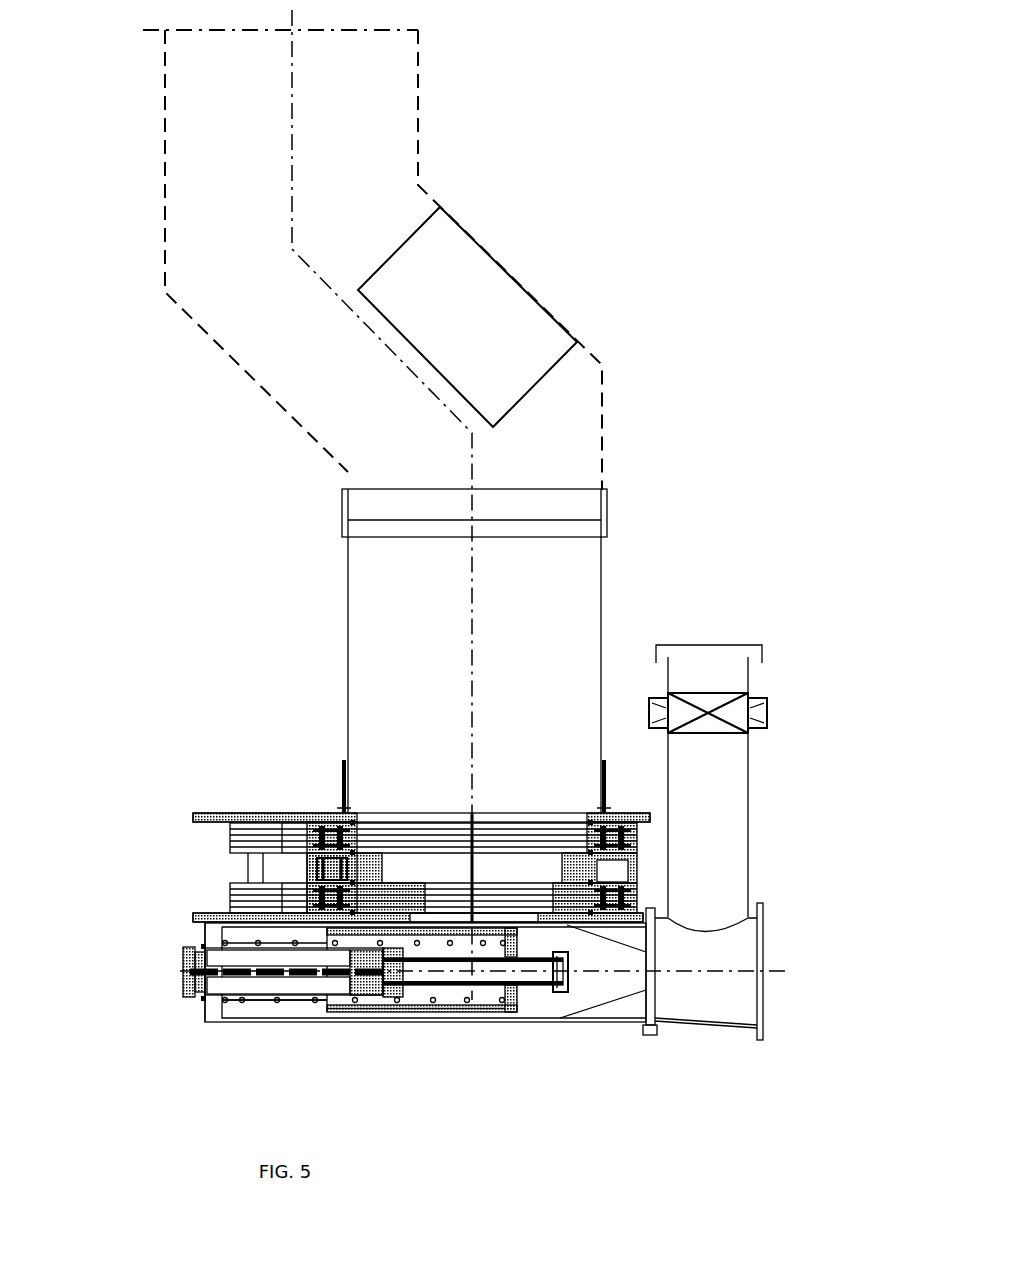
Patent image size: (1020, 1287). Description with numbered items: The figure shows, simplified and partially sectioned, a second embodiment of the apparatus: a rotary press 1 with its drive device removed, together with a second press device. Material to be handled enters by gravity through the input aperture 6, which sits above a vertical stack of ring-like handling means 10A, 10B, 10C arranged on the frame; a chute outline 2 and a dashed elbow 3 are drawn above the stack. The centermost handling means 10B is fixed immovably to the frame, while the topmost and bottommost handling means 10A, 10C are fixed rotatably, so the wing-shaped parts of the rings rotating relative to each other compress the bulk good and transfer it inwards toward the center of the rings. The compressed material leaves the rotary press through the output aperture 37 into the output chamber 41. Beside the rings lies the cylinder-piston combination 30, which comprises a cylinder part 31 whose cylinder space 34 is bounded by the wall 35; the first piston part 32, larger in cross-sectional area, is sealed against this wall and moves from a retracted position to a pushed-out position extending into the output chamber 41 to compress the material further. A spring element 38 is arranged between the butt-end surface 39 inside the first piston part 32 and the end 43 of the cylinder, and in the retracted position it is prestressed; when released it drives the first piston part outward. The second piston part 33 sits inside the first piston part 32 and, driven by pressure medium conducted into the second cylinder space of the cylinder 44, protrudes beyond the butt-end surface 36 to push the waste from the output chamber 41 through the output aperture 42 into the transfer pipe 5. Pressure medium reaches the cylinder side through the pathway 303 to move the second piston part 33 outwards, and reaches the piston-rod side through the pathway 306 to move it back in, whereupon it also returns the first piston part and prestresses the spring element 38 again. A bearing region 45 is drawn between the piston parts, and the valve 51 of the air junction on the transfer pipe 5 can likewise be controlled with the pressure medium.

The rotary press 1 is at (177, 835).
The duct 2 is at (585, 632).
The duct elbow 3 is at (182, 123).
The transfer pipe 5 is at (752, 1027).
The input aperture 6 is at (456, 800).
The ring-like handling means 10A is at (638, 833).
The ring-like handling means 10B is at (633, 862).
The ring-like handling means 10C is at (633, 895).
The cylinder-piston combination 30 is at (142, 992).
The cylinder part 31 is at (250, 1018).
The first piston part 32 is at (460, 1015).
The second piston part 33 is at (548, 992).
The cylinder space 34 is at (302, 1010).
The wall 35 is at (323, 1017).
The butt-end surface 36 is at (513, 1013).
The output aperture 37 is at (505, 922).
The spring element 38 is at (432, 1008).
The butt-end surface 39 is at (500, 1005).
The output chamber 41 is at (610, 993).
The output aperture 42 is at (643, 990).
The end of the cylinder 43 is at (222, 1022).
The cylinder 44 is at (287, 998).
The bearing 45 is at (372, 988).
The valve of the air junction 51 is at (737, 707).
The pathway of the medium 303 is at (188, 998).
The pathway of the medium 306 is at (190, 947).